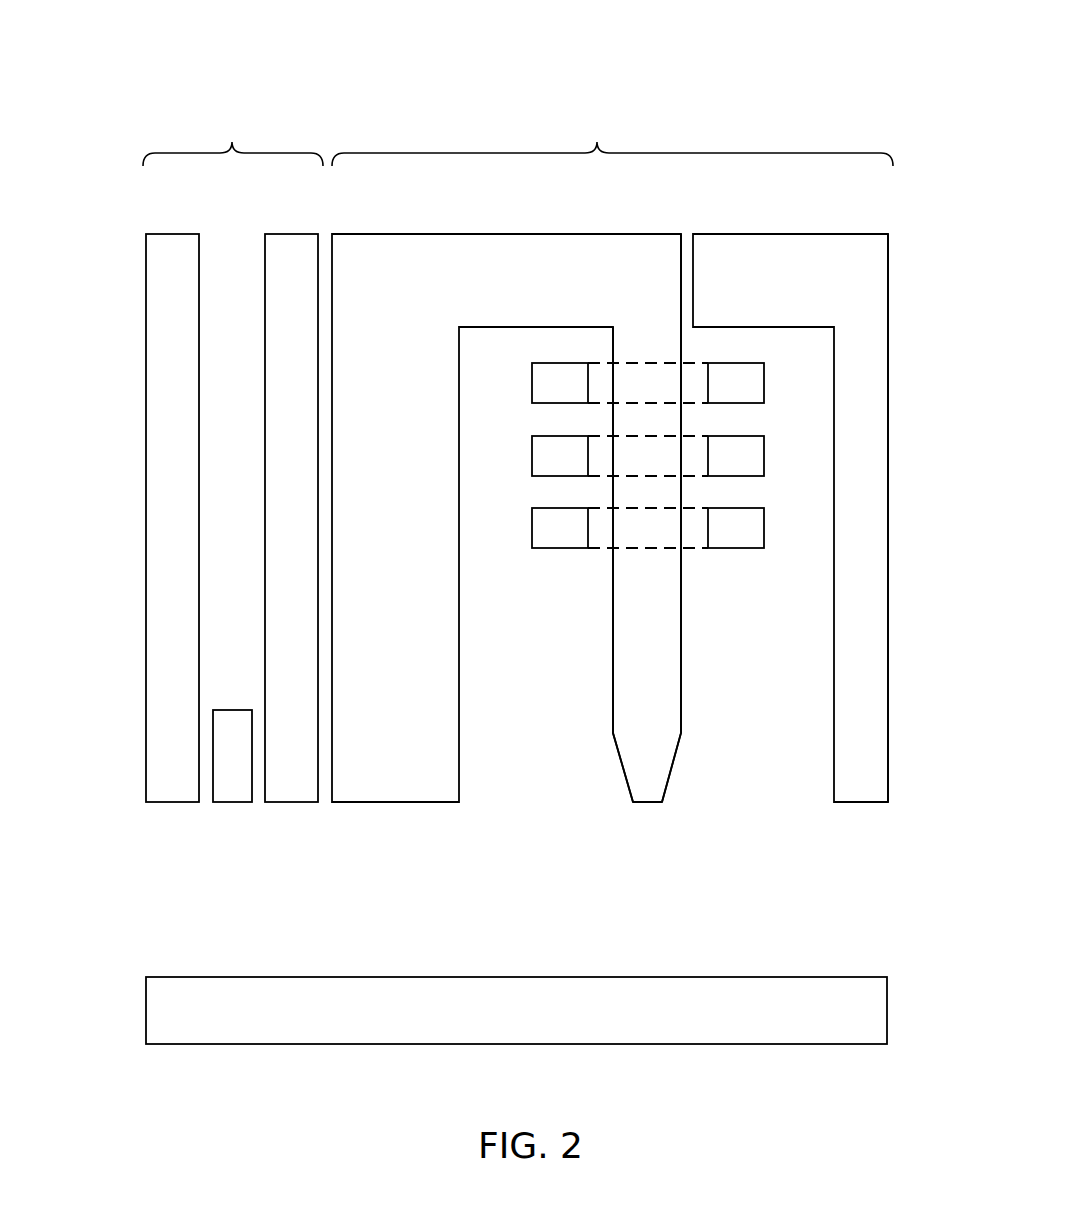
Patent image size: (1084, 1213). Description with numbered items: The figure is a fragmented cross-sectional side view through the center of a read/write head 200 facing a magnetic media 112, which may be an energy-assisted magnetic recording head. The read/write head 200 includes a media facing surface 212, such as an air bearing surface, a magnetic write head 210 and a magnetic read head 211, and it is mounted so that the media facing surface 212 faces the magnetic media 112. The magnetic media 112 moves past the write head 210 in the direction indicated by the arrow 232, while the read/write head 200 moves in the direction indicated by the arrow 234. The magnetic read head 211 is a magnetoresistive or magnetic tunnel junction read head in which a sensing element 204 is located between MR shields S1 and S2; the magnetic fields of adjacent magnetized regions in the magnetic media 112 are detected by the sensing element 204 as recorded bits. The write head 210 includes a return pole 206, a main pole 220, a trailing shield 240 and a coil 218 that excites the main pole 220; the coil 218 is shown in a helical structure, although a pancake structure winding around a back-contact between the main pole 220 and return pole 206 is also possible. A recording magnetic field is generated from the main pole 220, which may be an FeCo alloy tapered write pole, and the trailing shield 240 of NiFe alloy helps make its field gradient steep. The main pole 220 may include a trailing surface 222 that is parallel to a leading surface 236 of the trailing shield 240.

The read/write head 200 is at (136, 57).
The magnetic read head 211 is at (233, 139).
The magnetic write head 210 is at (612, 137).
The MR shield S1 is at (170, 802).
The MR sensing element 204 is at (233, 802).
The MR shield S2 is at (297, 802).
The return pole 206 is at (396, 802).
The coil 218 is at (558, 548).
The main pole 220 is at (622, 760).
The trailing surface 222 is at (682, 720).
The media facing surface 212 is at (650, 802).
The leading surface 236 is at (833, 630).
The trailing shield 240 is at (888, 763).
The arrow 234 is at (105, 430).
The arrow 232 is at (704, 953).
The magnetic media 112 is at (887, 1010).